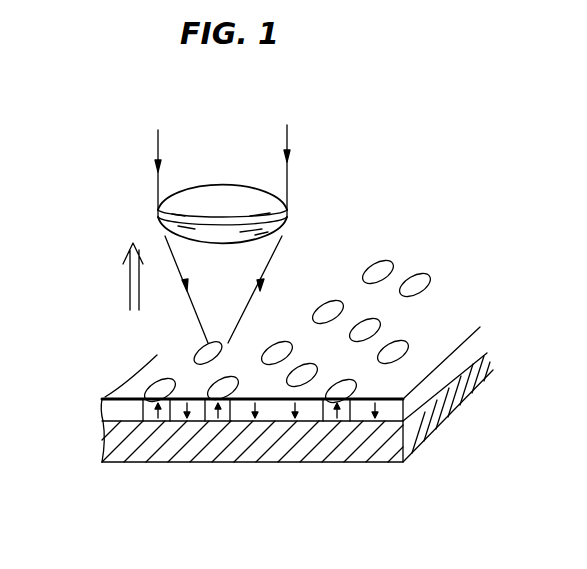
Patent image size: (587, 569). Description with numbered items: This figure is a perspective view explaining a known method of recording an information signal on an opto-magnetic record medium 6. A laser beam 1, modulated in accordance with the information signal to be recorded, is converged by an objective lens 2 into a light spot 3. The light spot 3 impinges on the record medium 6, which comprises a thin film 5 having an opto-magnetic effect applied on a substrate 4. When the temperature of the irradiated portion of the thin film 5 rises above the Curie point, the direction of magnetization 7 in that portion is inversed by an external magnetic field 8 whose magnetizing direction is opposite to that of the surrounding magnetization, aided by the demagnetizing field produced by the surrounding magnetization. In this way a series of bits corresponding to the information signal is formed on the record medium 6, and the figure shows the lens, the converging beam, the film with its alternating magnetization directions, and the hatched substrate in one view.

The laser beam 1 is at (287, 136).
The objective lens 2 is at (288, 211).
The light spot 3 is at (198, 350).
The substrate 4 is at (102, 453).
The thin film 5 is at (110, 410).
The record medium 6 is at (347, 463).
The direction of magnetization 7 is at (290, 381).
The external magnetic field 8 is at (127, 287).